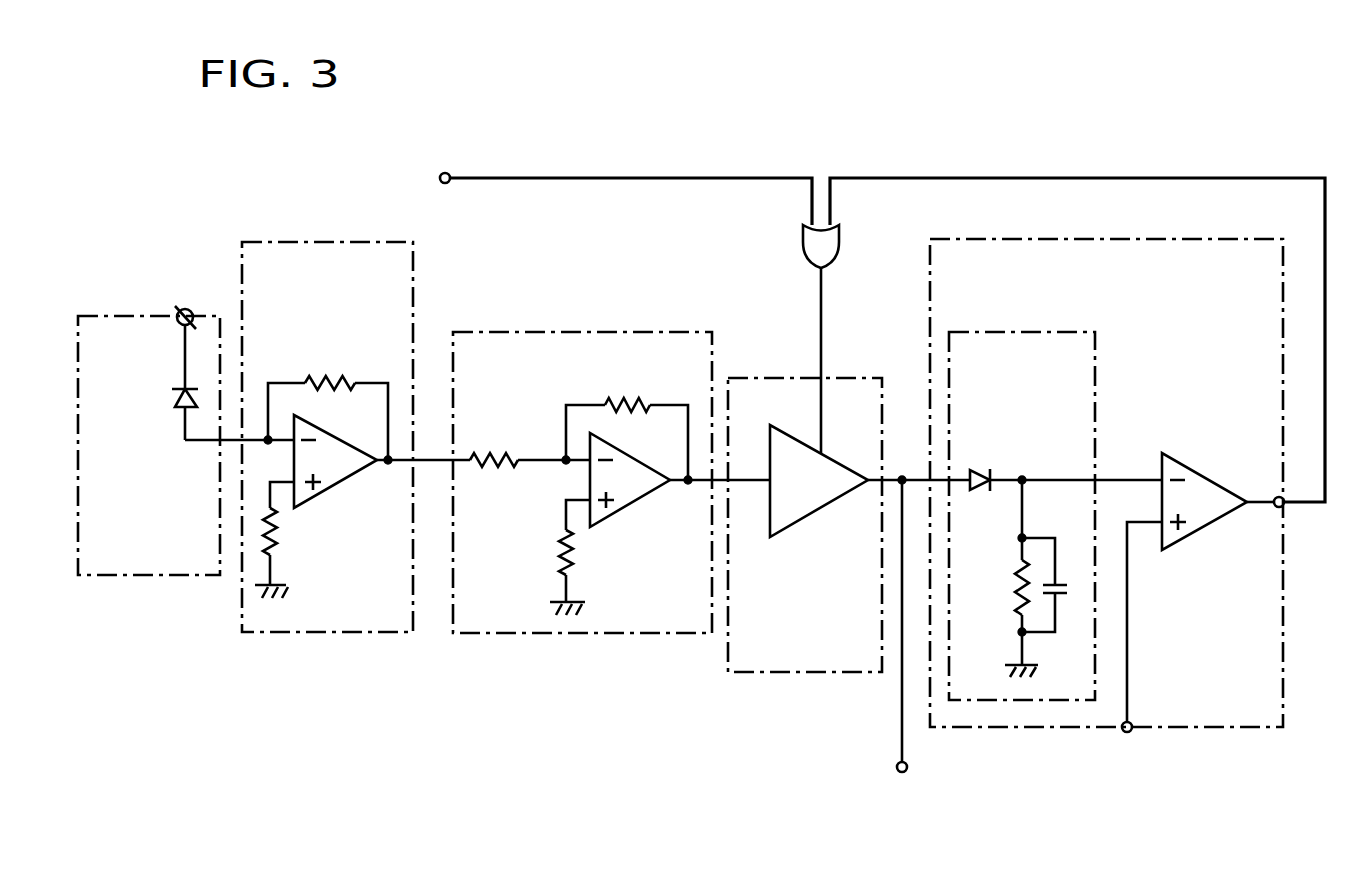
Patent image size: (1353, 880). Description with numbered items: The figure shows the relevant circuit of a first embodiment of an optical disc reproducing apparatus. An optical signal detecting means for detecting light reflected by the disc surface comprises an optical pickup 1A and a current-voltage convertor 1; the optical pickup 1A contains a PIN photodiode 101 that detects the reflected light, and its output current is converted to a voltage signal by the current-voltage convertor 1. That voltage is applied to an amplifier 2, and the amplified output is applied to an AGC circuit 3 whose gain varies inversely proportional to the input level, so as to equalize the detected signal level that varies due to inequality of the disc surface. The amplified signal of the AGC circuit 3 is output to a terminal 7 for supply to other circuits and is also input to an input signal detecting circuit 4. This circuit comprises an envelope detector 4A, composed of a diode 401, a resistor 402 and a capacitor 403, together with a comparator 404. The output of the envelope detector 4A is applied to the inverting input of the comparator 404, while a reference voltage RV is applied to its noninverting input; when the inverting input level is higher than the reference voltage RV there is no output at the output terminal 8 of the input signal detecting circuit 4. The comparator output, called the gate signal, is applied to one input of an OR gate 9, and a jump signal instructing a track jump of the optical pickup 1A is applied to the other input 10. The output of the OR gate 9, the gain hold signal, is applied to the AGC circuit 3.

The current-voltage convertor 1 is at (262, 240).
The optical pickup 1A is at (145, 478).
The PIN photodiode 101 is at (178, 400).
The amplifier 2 is at (485, 330).
The AGC circuit 3 is at (752, 675).
The input signal detecting circuit 4 is at (950, 236).
The envelope detector 4A is at (1097, 355).
The diode 401 is at (981, 472).
The resistor 402 is at (1012, 580).
The capacitor 403 is at (1060, 580).
The comparator 404 is at (1218, 527).
The terminal 7 is at (907, 767).
The output terminal 8 is at (1285, 506).
The OR gate 9 is at (803, 240).
The other input 10 is at (445, 173).
The reference voltage RV is at (1127, 732).